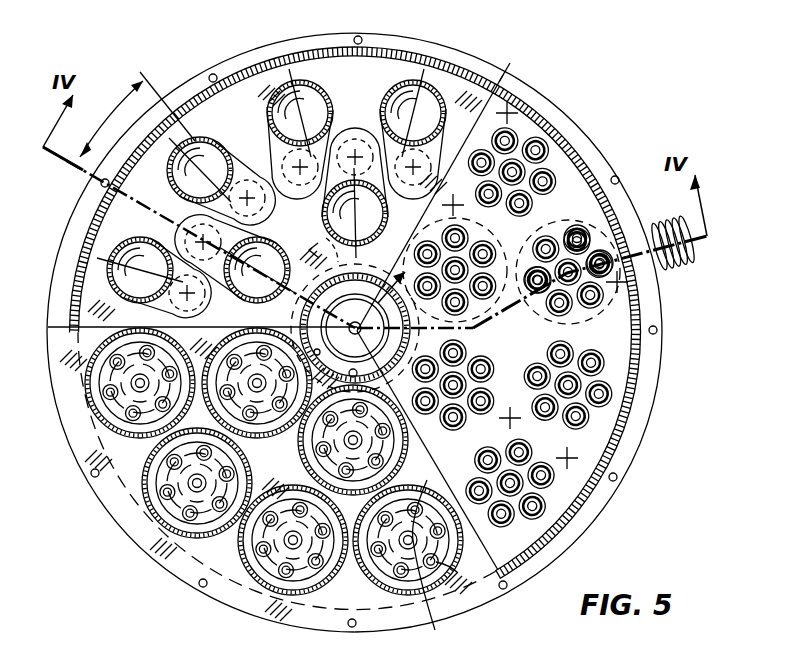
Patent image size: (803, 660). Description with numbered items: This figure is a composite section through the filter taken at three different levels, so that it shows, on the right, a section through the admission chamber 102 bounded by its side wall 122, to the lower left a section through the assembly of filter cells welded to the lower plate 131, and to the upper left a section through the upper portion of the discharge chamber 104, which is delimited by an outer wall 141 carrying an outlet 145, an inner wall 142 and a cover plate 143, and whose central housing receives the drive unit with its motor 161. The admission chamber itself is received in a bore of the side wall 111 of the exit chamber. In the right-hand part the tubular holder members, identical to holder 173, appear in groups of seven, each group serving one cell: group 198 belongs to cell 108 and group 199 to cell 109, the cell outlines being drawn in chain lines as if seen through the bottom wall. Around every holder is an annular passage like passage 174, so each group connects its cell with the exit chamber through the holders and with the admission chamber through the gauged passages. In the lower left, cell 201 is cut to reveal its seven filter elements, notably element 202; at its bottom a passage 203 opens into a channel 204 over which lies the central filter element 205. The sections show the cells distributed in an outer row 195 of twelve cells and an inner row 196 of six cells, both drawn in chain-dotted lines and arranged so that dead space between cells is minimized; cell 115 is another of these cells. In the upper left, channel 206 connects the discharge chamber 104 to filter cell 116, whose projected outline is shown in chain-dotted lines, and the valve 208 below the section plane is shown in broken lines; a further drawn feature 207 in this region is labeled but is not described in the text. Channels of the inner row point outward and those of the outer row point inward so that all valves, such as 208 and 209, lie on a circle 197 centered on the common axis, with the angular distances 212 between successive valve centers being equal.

The admission chamber 102 is at (587, 447).
The discharge chamber 104 is at (320, 67).
The filter cell 108 is at (458, 283).
The filter cell 109 is at (617, 300).
The side wall 111 is at (533, 100).
The filter cell 115 is at (196, 100).
The filter cell 116 is at (326, 252).
The side wall 122 is at (563, 133).
The lower plate 131 is at (122, 517).
The outer wall 141 is at (425, 47).
The inner wall 142 is at (355, 193).
The cover plate 143 is at (238, 583).
The outlet 145 is at (672, 266).
The motor 161 is at (357, 345).
The tubular holder member 173 is at (575, 228).
The annular passage 174 is at (590, 230).
The outer row 195 is at (245, 543).
The inner row 196 is at (275, 428).
The circle 197 is at (356, 110).
The group of tubular holder members 198 is at (355, 328).
The group of tubular holder members 199 is at (540, 302).
The filter cell 201 is at (372, 574).
The filter element 202 is at (439, 566).
The passage 203 is at (458, 573).
The channel 204 is at (455, 538).
The central filter element 205 is at (412, 500).
The channel 206 is at (180, 268).
The cylinder 207 is at (221, 160).
The valve 208 is at (180, 232).
The valve 209 is at (267, 199).
The angular distance 212 is at (113, 110).